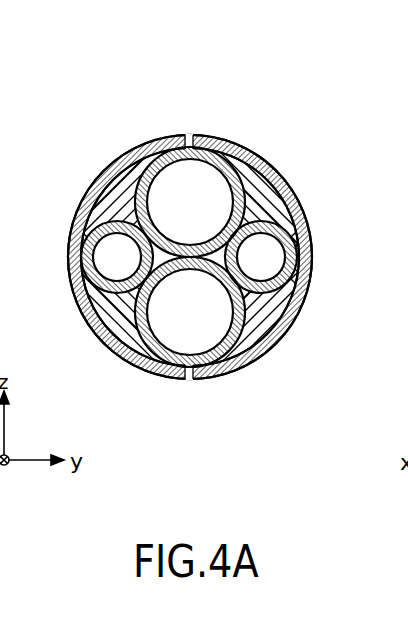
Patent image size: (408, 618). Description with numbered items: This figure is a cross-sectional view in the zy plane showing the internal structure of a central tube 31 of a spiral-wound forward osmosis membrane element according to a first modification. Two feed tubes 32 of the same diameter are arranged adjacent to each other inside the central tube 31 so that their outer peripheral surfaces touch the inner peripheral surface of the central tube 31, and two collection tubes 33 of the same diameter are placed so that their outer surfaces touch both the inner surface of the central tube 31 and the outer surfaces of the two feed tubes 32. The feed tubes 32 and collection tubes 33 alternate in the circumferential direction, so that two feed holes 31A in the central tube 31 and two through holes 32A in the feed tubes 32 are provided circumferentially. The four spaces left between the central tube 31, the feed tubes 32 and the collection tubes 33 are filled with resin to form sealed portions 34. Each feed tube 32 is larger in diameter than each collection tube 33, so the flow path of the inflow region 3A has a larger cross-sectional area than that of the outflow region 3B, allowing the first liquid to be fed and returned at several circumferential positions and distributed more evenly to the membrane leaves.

The inflow region 3A is at (202, 215).
The outflow region 3B is at (129, 269).
The central tube 31 is at (210, 138).
The feed hole 31A is at (192, 136).
The feed tube 32 is at (232, 143).
The through hole 32A is at (185, 136).
The collection tube 33 is at (74, 262).
The sealed portion 34 is at (288, 212).